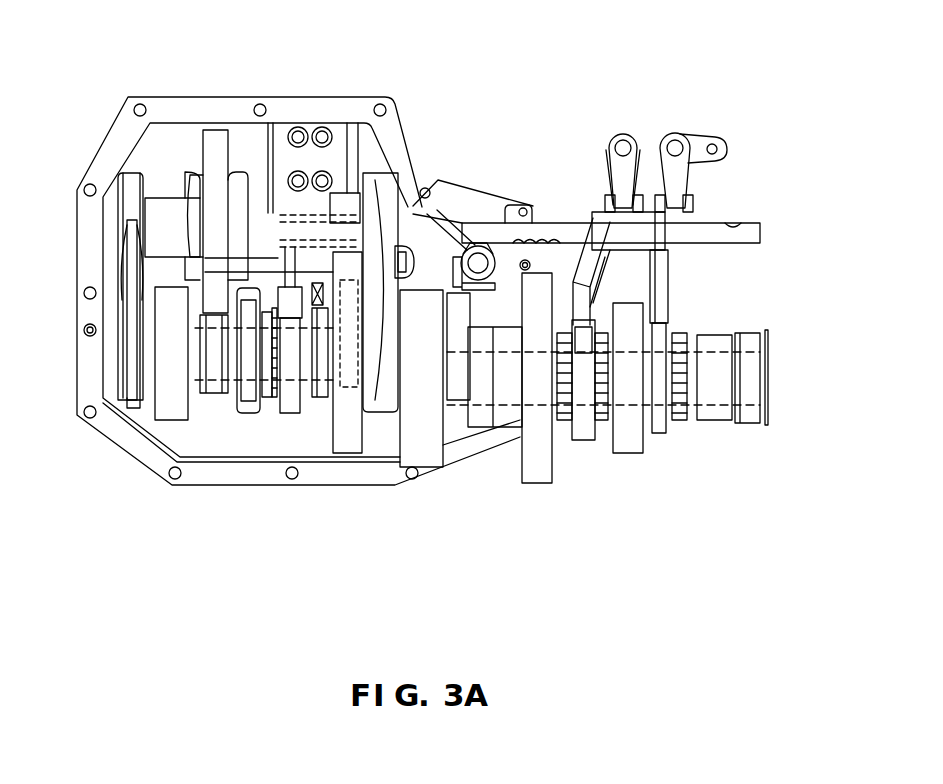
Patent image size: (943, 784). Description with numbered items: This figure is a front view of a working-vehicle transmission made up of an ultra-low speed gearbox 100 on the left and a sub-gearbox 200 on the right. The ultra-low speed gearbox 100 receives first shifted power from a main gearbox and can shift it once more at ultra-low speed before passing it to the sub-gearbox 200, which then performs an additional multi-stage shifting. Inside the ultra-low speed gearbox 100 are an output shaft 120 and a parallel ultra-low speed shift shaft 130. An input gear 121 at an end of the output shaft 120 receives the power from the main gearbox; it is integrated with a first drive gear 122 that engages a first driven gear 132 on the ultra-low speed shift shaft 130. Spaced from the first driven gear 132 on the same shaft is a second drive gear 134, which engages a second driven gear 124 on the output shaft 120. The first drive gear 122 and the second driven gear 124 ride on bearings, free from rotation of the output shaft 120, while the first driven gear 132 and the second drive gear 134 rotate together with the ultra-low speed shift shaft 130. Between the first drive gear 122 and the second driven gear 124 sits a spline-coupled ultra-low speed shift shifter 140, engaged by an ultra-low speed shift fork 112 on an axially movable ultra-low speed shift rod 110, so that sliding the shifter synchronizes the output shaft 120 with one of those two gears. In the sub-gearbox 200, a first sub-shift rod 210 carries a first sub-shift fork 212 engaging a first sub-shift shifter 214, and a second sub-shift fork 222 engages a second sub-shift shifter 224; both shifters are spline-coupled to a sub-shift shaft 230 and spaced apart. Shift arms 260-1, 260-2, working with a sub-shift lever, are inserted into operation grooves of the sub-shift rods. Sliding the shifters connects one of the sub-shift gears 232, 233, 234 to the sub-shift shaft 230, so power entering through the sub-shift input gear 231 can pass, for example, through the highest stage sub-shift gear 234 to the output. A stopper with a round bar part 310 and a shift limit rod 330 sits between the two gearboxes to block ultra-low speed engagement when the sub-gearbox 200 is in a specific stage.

The ultra-low speed gearbox 100 is at (128, 424).
The ultra-low speed shift rod 110 is at (432, 225).
The ultra-low speed shift fork 112 is at (290, 267).
The output shaft 120 is at (222, 320).
The input gear 121 is at (207, 387).
The first drive gear 122 is at (173, 405).
The second driven gear 124 is at (345, 450).
The ultra-low speed shift shaft 130 is at (160, 215).
The first driven gear 132 is at (218, 143).
The second drive gear 134 is at (338, 200).
The ultra-low speed shift shifter 140 is at (300, 405).
The sub-gearbox 200 is at (767, 415).
The first sub-shift rod 210 is at (750, 226).
The first sub-shift fork 212 is at (587, 268).
The first sub-shift shifter 214 is at (577, 440).
The second sub-shift fork 222 is at (660, 287).
The second sub-shift shifter 224 is at (657, 437).
The sub-shift shaft 230 is at (752, 365).
The sub-shift input gear 231 is at (428, 455).
The sub-shift gear 232 is at (713, 420).
The sub-shift gear 233 is at (632, 443).
The highest stage sub-shift gear 234 is at (537, 470).
The shift arm 260-1 is at (622, 140).
The shift arm 260-2 is at (676, 140).
The round bar part 310 is at (500, 208).
The shift limit rod 330 is at (400, 258).